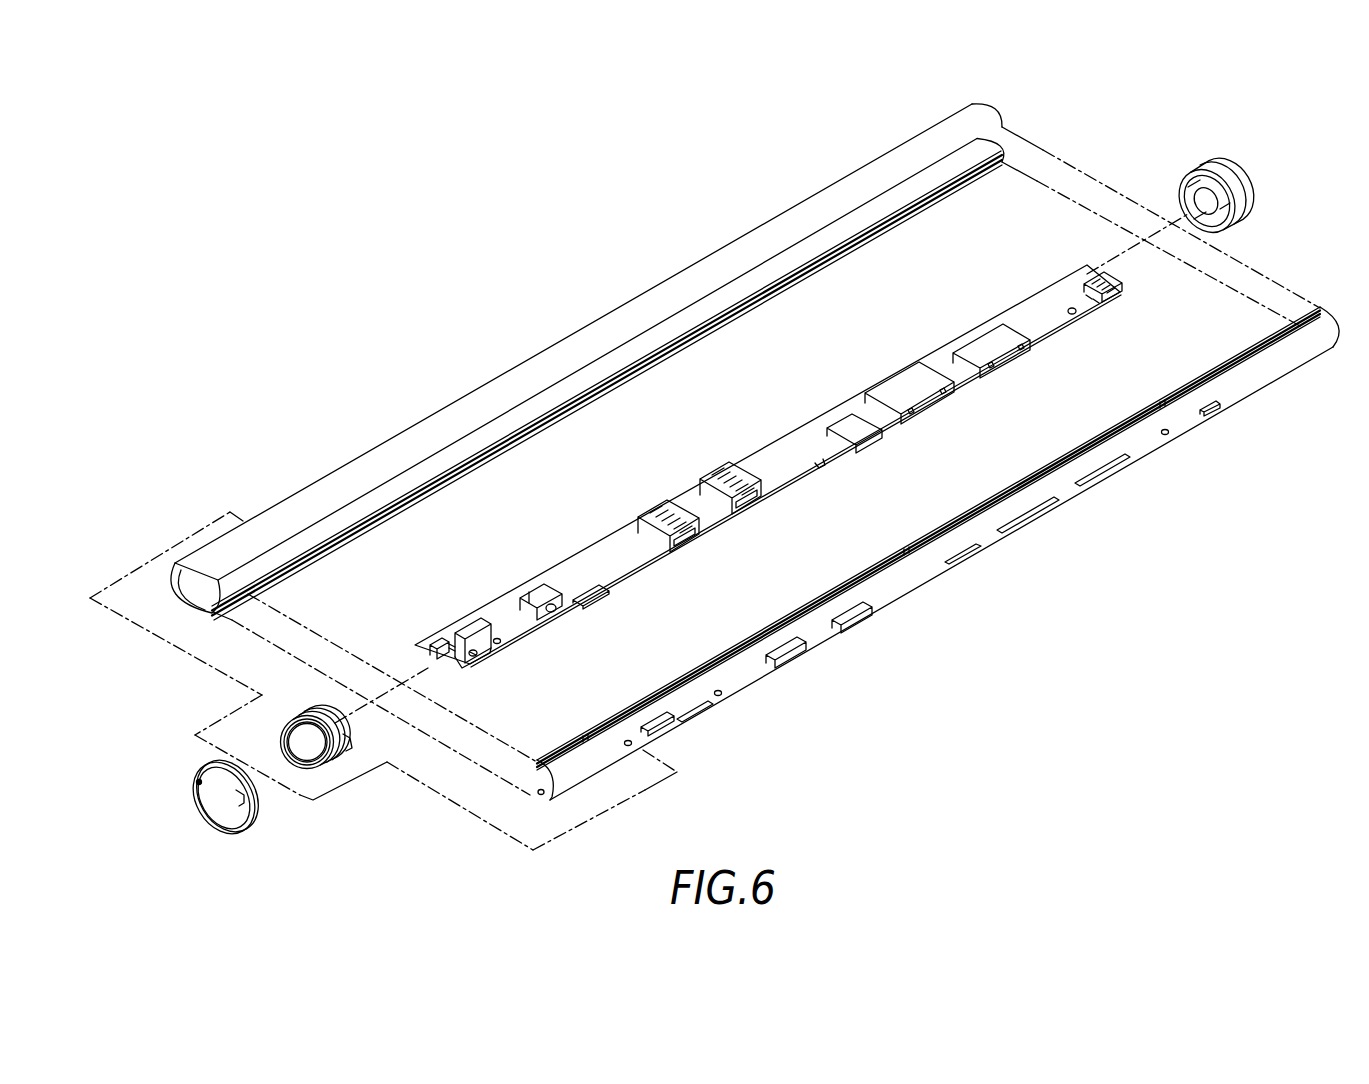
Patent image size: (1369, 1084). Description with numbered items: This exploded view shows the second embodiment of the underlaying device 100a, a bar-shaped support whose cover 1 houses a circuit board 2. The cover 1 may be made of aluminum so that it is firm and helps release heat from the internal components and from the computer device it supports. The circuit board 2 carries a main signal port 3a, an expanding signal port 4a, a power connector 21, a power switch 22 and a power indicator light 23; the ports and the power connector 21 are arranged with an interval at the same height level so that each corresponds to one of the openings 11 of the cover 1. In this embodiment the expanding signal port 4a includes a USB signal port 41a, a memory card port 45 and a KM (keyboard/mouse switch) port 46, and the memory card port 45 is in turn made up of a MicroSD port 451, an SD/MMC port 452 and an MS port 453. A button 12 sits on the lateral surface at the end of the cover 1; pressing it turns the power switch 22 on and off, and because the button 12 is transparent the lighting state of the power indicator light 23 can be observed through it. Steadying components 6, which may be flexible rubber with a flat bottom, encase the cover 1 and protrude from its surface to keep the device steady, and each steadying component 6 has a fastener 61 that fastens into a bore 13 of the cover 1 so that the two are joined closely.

The electronic device 100a is at (530, 265).
The bar-shaped cover 1 is at (722, 265).
The openings 11 is at (1106, 478).
The button 12 is at (307, 750).
The bore 13 is at (630, 746).
The circuit board 2 is at (1050, 320).
The power connector 21 is at (535, 590).
The power switch 22 is at (465, 625).
The power indicator light 23 is at (480, 657).
The indicator element 3a is at (590, 584).
The expanding signal port 4a is at (1045, 193).
The USB signal port 41a is at (652, 509).
The memory card port 45 is at (990, 258).
The MicroSD port 451 is at (842, 425).
The SD/MMC port 452 is at (898, 390).
The MS port 453 is at (982, 343).
The KM port 46 is at (1083, 277).
The steadying component 6 is at (198, 768).
The fastener 61 is at (197, 783).